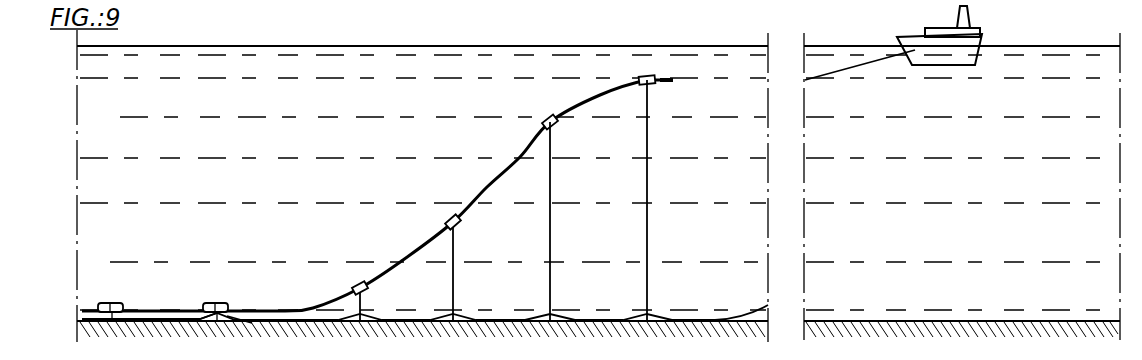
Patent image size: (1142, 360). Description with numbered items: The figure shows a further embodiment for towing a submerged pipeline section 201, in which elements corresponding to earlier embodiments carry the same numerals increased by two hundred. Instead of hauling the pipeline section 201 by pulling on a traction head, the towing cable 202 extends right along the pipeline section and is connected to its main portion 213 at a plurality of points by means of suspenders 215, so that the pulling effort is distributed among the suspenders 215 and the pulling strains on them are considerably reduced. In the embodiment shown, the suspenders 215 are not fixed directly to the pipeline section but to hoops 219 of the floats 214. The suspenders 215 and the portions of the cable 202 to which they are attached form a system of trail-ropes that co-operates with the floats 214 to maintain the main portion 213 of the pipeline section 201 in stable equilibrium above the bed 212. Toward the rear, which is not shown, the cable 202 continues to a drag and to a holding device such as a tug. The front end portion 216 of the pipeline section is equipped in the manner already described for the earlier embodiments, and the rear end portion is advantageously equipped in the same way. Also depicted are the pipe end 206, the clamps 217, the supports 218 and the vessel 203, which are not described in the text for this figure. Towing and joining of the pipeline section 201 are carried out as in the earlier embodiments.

The pipeline section 201 is at (283, 310).
The towing cable 202 is at (175, 318).
The vessel 203 is at (918, 43).
The pipeline end 206 is at (673, 77).
The bed 212 is at (860, 321).
The main portion 213 is at (88, 305).
The floats 214 is at (218, 300).
The suspenders 215 is at (253, 323).
The front end portion 216 is at (497, 168).
The clamp 217 is at (548, 119).
The support 218 is at (550, 240).
The hoops 219 is at (208, 305).